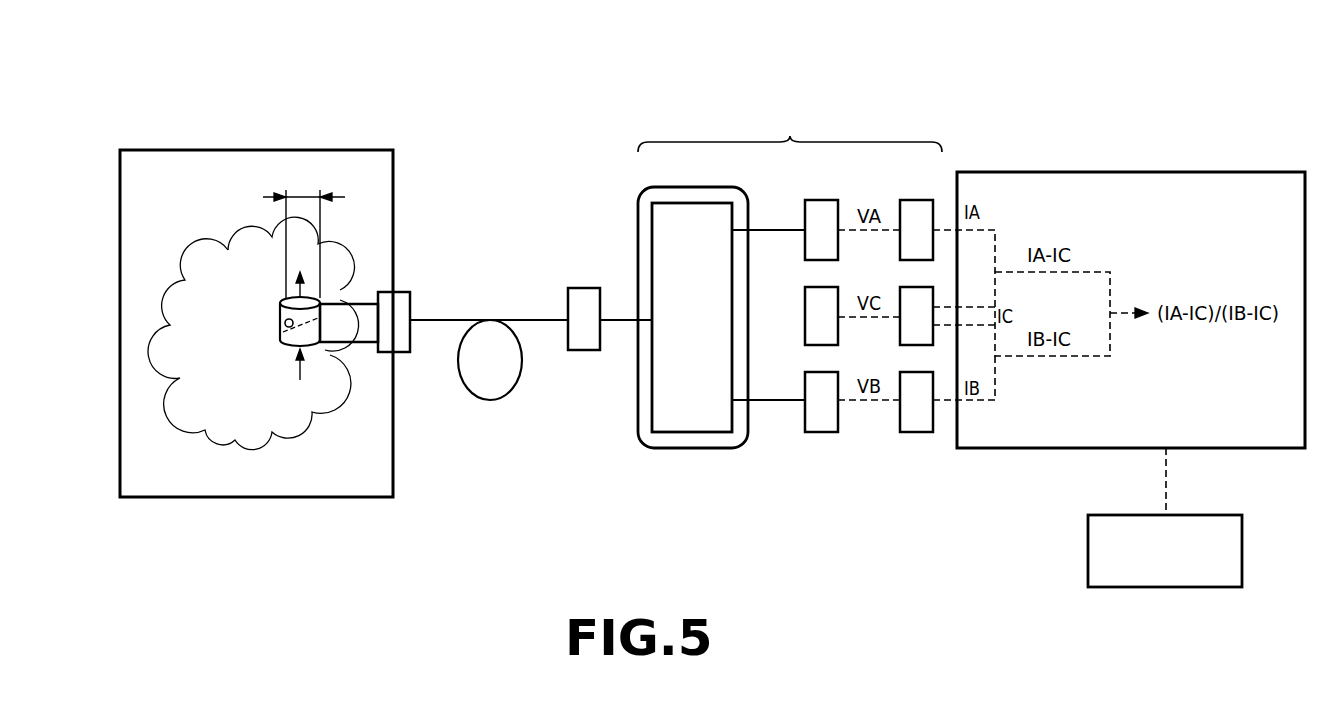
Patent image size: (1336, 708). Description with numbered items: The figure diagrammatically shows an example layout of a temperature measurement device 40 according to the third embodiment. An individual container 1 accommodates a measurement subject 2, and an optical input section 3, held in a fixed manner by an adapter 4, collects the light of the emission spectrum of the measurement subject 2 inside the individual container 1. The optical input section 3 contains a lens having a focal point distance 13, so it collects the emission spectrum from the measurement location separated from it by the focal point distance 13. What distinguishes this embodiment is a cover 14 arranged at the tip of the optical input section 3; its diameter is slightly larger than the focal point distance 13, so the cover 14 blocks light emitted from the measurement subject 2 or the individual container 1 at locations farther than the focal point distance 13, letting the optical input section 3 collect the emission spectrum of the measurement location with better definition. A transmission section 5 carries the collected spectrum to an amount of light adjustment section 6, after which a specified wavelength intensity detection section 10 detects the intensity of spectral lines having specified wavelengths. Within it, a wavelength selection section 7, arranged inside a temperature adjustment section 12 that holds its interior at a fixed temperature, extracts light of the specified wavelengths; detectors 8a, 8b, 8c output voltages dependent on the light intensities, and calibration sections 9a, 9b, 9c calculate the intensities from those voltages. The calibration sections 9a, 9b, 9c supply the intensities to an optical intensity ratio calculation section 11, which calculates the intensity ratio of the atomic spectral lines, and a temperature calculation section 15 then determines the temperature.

The individual container 1 is at (263, 150).
The measurement subject 2 is at (194, 240).
The optical input section 3 is at (360, 303).
The adapter 4 is at (400, 291).
The transmission section 5 is at (527, 319).
The amount of light adjustment section 6 is at (578, 287).
The wavelength selection section 7 is at (691, 434).
The detector 8a is at (823, 199).
The detector 8b is at (839, 420).
The detector 8c is at (839, 288).
The calibration section 9a is at (917, 199).
The calibration section 9b is at (917, 433).
The calibration section 9c is at (900, 330).
The specified wavelength intensity detection section 10 is at (790, 136).
The optical intensity ratio calculation section 11 is at (1131, 171).
The temperature adjustment section 12 is at (637, 222).
The focal point distance 13 is at (303, 196).
The cover 14 is at (282, 326).
The temperature calculation section 15 is at (1196, 588).
The temperature measurement device 40 is at (493, 90).